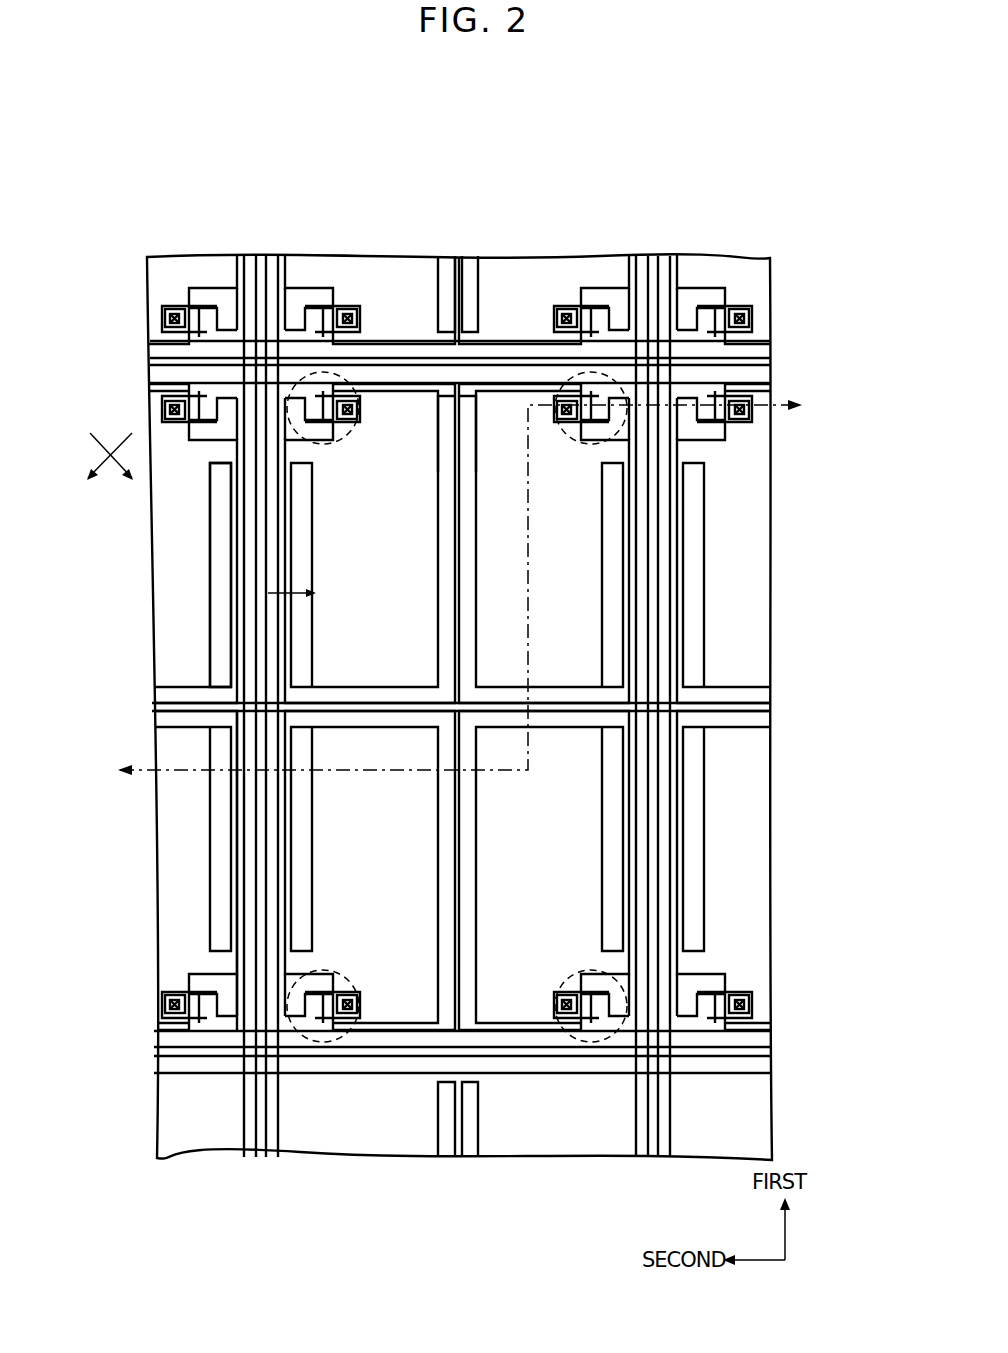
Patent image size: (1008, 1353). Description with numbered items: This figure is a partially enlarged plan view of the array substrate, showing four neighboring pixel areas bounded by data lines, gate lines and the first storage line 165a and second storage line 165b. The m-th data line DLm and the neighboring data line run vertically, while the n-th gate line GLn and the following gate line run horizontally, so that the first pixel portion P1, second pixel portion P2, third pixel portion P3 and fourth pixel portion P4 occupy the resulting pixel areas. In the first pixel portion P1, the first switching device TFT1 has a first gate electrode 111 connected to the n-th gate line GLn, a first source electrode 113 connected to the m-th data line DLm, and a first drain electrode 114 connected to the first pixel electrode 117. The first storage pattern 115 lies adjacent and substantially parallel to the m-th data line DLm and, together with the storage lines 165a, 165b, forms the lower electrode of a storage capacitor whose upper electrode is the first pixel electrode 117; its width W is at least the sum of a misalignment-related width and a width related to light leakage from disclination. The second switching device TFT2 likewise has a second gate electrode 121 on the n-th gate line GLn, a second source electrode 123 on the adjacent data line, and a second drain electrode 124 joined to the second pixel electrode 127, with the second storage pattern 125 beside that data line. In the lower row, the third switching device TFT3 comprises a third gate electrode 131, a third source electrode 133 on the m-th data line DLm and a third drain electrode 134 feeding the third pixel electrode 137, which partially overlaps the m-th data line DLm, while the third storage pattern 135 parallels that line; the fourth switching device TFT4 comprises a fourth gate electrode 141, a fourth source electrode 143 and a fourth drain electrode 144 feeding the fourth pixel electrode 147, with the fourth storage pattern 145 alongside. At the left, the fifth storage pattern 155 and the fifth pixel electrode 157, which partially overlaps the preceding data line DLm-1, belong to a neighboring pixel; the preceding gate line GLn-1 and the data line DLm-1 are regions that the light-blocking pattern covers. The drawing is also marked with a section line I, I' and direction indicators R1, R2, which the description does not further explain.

The first gate electrode 111 is at (322, 423).
The first source electrode 113 is at (340, 440).
The first drain electrode 114 is at (358, 410).
The first storage pattern 115 is at (305, 630).
The first pixel electrode 117 is at (390, 384).
The second gate electrode 121 is at (592, 423).
The second source electrode 123 is at (574, 440).
The second drain electrode 124 is at (556, 410).
The second storage pattern 125 is at (610, 630).
The second pixel electrode 127 is at (530, 384).
The third gate electrode 131 is at (322, 992).
The third source electrode 133 is at (340, 976).
The third drain electrode 134 is at (358, 1005).
The third storage pattern 135 is at (312, 824).
The third pixel electrode 137 is at (395, 1030).
The fourth gate electrode 141 is at (592, 992).
The fourth source electrode 143 is at (574, 976).
The fourth drain electrode 144 is at (556, 1005).
The fourth storage pattern 145 is at (604, 824).
The fourth pixel electrode 147 is at (528, 1030).
The fifth storage pattern 155 is at (220, 824).
The fifth pixel electrode 157 is at (178, 942).
The first storage line 165a is at (462, 258).
The second storage line 165b is at (775, 699).
The first pixel portion P1 is at (361, 451).
The second pixel portion P2 is at (544, 451).
The third pixel portion P3 is at (370, 964).
The fourth pixel portion P4 is at (544, 964).
The first switching device TFT1 is at (359, 436).
The second switching device TFT2 is at (556, 436).
The third switching device TFT3 is at (359, 980).
The fourth switching device TFT4 is at (556, 980).
The (m−1)-th data line DLm-1 is at (252, 255).
The m-th data line DLm is at (284, 255).
The (n−1)-th gate line GLn-1 is at (160, 348).
The n-th gate line GLn is at (160, 376).
The width of the first storage pattern W is at (300, 593).
The section line I is at (454, 592).
The section line I' is at (817, 406).
The first direction R1 is at (118, 472).
The second direction R2 is at (101, 472).